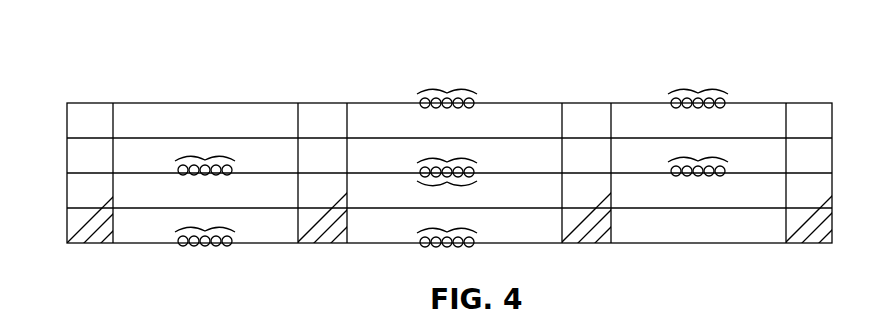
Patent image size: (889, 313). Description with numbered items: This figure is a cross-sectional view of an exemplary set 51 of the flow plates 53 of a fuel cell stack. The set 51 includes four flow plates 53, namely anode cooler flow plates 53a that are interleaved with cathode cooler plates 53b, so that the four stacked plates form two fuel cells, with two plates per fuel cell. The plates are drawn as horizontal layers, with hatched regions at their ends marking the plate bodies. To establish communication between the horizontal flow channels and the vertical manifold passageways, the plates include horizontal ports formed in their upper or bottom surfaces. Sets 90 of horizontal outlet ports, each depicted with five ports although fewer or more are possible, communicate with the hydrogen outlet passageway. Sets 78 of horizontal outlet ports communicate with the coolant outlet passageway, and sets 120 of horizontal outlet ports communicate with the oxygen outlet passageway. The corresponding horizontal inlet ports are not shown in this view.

The set of flow plates 51 is at (174, 74).
The flow plates 53 is at (832, 117).
The anode cooler flow plates 53a is at (66, 120).
The cathode cooler plates 53b is at (66, 155).
The set of horizontal outlet ports 78 is at (447, 92).
The set of horizontal outlet ports 90 is at (698, 92).
The set of horizontal outlet ports 120 is at (205, 159).